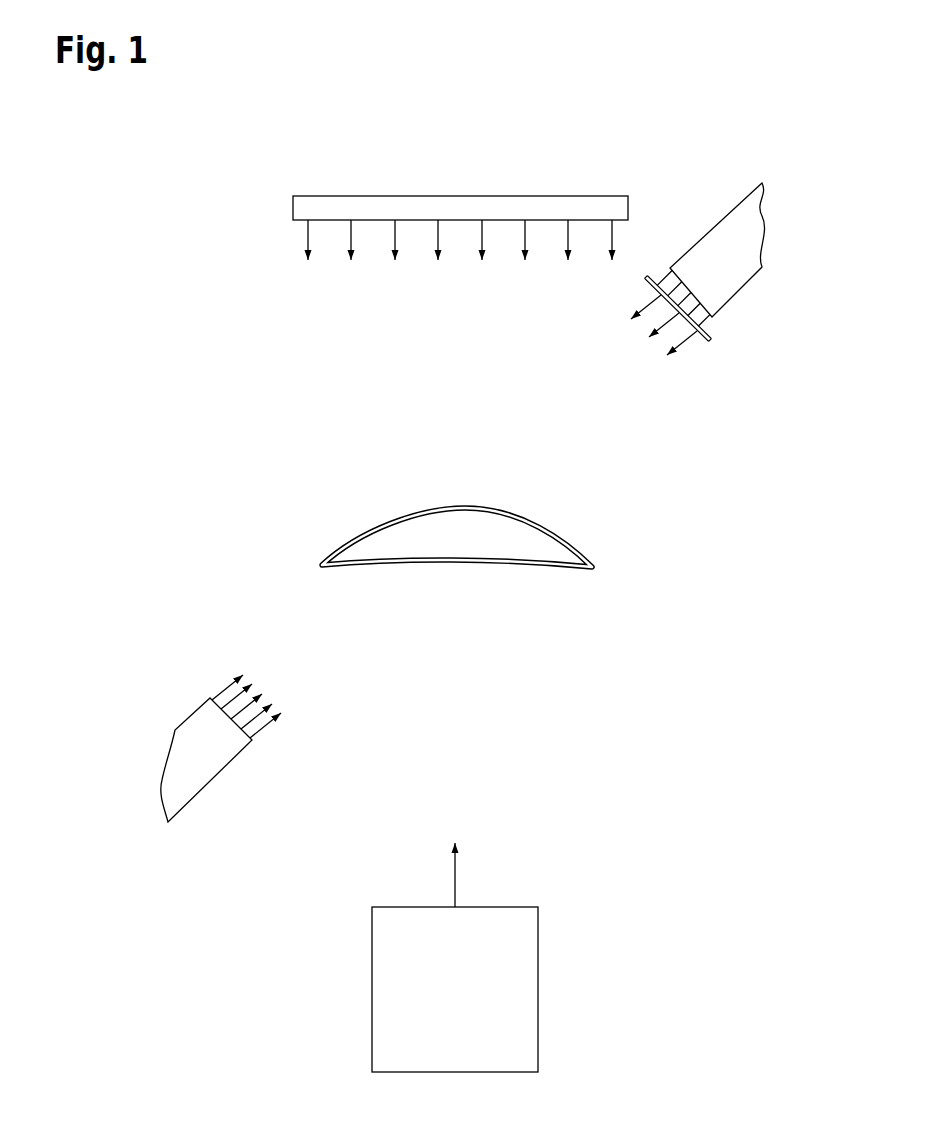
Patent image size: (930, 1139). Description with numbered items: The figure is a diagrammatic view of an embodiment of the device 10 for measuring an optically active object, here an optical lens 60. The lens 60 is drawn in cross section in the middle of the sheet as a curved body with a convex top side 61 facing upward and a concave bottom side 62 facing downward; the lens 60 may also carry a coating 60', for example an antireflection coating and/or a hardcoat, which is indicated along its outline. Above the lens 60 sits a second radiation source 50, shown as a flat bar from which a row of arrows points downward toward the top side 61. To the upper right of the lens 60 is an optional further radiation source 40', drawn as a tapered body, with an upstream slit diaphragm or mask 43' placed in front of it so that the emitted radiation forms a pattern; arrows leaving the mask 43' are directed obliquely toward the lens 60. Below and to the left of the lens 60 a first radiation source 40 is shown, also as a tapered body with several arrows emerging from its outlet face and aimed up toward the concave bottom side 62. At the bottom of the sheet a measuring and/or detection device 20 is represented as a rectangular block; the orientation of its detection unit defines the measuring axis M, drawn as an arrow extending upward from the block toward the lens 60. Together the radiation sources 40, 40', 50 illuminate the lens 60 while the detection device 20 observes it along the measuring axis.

The device 10 is at (608, 128).
The measuring and/or detection device 20 is at (468, 1003).
The first radiation source 40 is at (221, 748).
The further radiation source 40' is at (717, 250).
The slit diaphragm or mask 43' is at (710, 327).
The second radiation source 50 is at (292, 206).
The lens 60 is at (457, 537).
The coating 60' is at (631, 564).
The convex top side 61 is at (480, 507).
The concave bottom side 62 is at (455, 566).